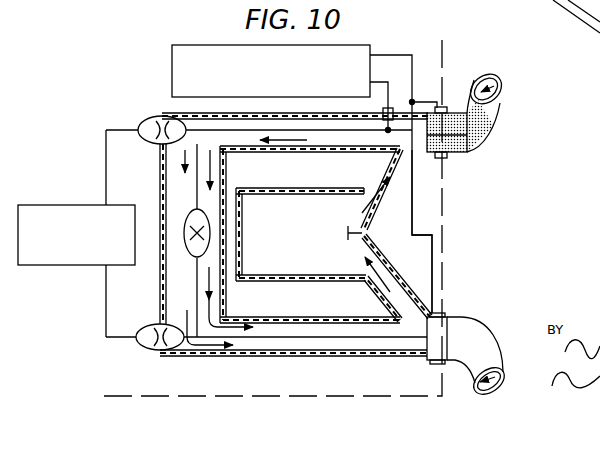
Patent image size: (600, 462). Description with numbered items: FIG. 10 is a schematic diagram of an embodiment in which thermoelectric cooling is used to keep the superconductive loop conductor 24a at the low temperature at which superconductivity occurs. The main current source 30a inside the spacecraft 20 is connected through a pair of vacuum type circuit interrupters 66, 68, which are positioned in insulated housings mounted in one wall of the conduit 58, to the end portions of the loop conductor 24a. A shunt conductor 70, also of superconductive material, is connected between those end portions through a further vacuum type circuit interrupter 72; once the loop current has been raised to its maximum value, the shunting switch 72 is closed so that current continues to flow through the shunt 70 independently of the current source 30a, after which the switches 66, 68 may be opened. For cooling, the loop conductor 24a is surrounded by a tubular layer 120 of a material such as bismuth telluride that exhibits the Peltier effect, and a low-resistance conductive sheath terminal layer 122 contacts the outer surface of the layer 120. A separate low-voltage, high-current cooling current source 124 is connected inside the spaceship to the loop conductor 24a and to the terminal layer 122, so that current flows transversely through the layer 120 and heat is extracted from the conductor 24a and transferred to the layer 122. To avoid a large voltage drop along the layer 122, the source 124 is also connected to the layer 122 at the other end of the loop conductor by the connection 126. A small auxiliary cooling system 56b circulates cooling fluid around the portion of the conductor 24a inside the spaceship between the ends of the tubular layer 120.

The spacecraft 20 is at (443, 52).
The loop conductor 24a is at (504, 84).
The current source 30a is at (67, 212).
The auxiliary cooling system 56b is at (285, 188).
The conduit 58 is at (257, 117).
The vacuum type circuit interrupter 66 is at (147, 342).
The vacuum type circuit interrupter 68 is at (148, 125).
The shunt conductor 70 is at (194, 288).
The vacuum type circuit interrupter 72 is at (187, 223).
The tubular layer 120 is at (478, 147).
The conductive sheath terminal layer 122 is at (447, 107).
The cooling current source 124 is at (180, 57).
The connection 126 is at (413, 205).